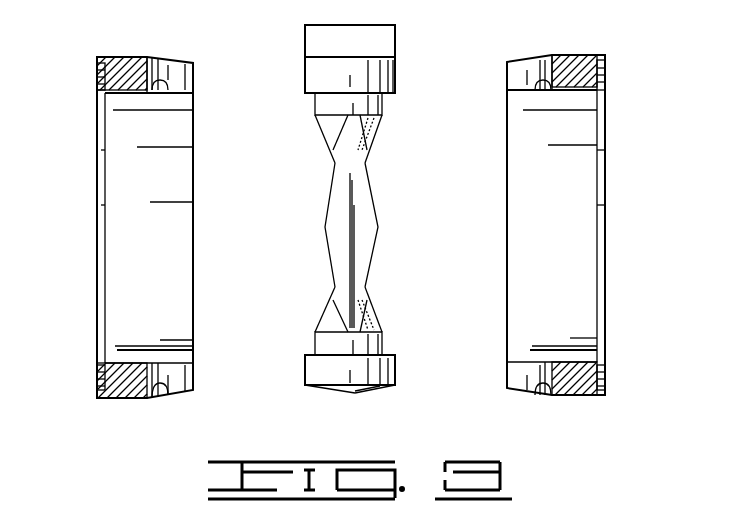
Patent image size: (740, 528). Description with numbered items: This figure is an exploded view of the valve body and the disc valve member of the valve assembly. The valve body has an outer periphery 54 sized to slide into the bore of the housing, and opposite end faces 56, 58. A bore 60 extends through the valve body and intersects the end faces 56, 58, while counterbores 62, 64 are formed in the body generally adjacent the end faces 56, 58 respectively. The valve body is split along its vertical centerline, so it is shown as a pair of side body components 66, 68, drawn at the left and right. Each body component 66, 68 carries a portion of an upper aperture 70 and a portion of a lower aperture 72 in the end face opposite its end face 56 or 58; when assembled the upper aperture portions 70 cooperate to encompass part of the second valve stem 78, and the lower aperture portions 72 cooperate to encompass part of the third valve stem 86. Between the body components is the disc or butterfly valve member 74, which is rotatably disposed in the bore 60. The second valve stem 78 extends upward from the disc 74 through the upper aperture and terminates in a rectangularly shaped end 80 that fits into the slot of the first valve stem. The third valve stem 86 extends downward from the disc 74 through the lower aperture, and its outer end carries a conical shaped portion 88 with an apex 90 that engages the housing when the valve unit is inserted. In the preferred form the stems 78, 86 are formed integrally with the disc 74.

The outer periphery 54 is at (130, 55).
The end face 56 is at (97, 62).
The end face 58 is at (600, 62).
The bore 60 is at (123, 363).
The counterbore 62 is at (98, 370).
The counterbore 64 is at (598, 378).
The side body component 66 is at (127, 68).
The side body component 68 is at (567, 67).
The upper aperture portion 70 is at (165, 85).
The lower aperture portion 72 is at (163, 387).
The disc valve member 74 is at (370, 222).
The second valve stem 78 is at (370, 85).
The rectangularly shaped end 80 is at (383, 47).
The third valve stem 86 is at (373, 368).
The conical shaped portion 88 is at (357, 393).
The apex 90 is at (355, 393).